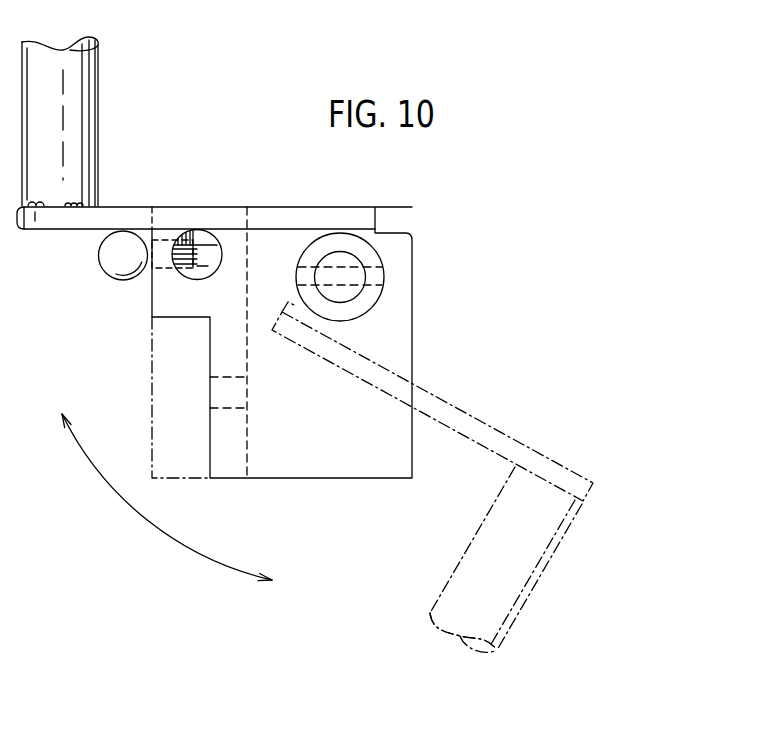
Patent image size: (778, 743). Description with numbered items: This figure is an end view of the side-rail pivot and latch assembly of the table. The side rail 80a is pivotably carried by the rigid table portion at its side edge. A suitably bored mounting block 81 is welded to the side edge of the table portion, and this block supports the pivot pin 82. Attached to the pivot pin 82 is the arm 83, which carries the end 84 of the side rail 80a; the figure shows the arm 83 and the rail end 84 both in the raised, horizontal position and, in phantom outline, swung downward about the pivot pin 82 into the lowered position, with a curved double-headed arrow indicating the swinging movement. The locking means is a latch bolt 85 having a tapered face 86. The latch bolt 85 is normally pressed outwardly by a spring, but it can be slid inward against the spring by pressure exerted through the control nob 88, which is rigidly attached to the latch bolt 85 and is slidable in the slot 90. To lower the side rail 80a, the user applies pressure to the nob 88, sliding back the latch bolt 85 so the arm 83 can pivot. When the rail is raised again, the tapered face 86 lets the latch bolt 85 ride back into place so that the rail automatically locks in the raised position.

The side rail 80a is at (500, 642).
The mounting block 81 is at (320, 460).
The pivot pin 82 is at (348, 262).
The arm 83 is at (135, 215).
The end of side rail 84 is at (92, 100).
The latch bolt 85 is at (200, 232).
The tapered face 86 is at (200, 270).
The control nob 88 is at (113, 275).
The slot 90 is at (150, 268).